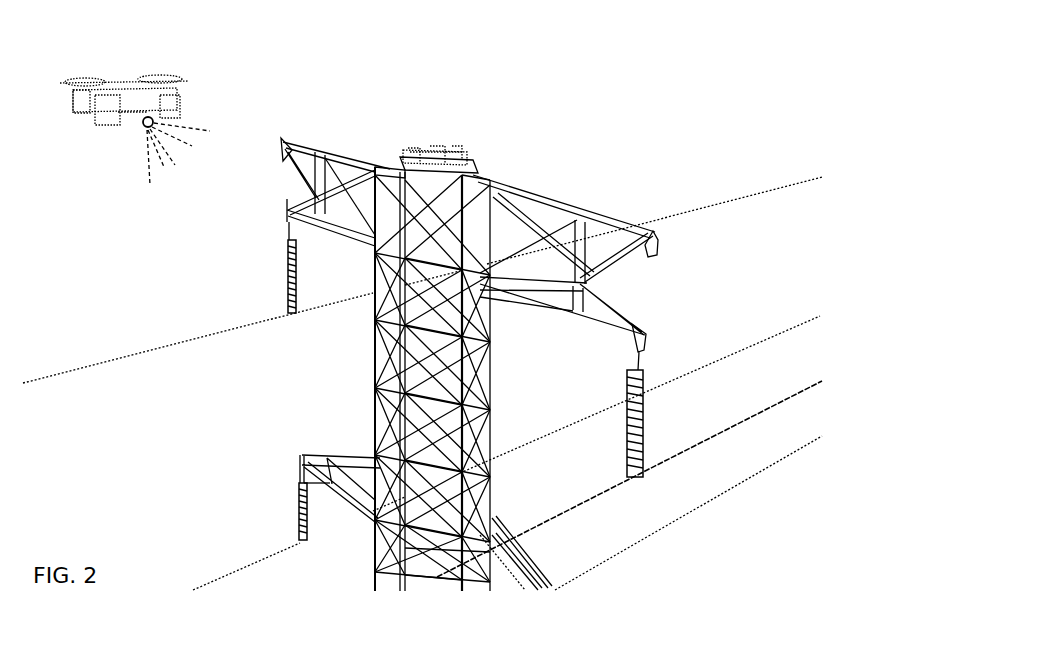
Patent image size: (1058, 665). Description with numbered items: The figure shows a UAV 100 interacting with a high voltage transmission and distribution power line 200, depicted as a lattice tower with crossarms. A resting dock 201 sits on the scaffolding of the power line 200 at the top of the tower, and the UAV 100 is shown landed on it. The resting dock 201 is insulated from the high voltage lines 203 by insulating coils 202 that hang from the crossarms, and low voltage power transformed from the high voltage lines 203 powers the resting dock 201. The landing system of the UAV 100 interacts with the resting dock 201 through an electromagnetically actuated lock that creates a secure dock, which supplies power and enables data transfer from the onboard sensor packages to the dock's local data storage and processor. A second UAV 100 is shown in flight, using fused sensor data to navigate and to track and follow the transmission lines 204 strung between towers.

The high voltage transmission and distribution power line 200 is at (712, 72).
The UAV 100 is at (90, 72).
The resting dock 201 is at (370, 405).
The insulating coils 202 is at (286, 270).
The high voltage lines 203 is at (125, 357).
The transmission lines 204 is at (145, 153).